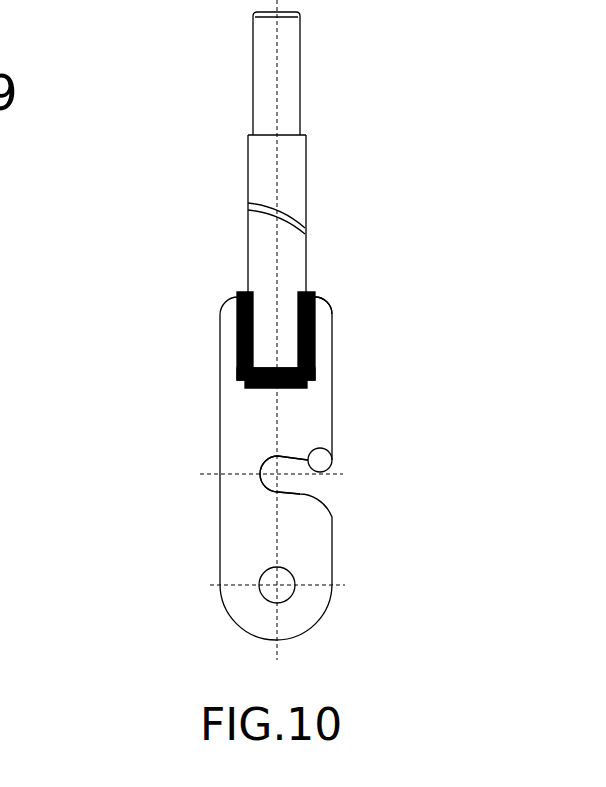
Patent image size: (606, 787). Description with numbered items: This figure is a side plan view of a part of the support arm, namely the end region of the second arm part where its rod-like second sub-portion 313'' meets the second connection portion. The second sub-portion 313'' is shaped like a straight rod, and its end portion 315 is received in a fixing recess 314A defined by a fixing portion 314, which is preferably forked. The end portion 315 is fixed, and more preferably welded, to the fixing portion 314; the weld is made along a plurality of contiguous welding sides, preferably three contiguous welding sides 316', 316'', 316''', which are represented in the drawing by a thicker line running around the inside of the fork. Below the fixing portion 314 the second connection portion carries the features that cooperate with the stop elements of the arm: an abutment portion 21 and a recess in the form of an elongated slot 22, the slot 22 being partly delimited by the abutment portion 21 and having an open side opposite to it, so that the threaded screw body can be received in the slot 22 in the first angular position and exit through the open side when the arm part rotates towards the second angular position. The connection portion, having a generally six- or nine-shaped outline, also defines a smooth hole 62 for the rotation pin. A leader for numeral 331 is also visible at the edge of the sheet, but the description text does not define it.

The element of adjacent figure 331 is at (17, 0).
The second sub-portion 313'' is at (359, 190).
The end portion 315 is at (267, 333).
The fixing portion 314 is at (220, 378).
The fixing recess 314A is at (295, 312).
The welding side 316' is at (190, 280).
The welding side 316'' is at (208, 410).
The welding side 316''' is at (394, 358).
The abutment portion 21 is at (253, 465).
The slot 22 is at (330, 449).
The hole 62 is at (288, 572).